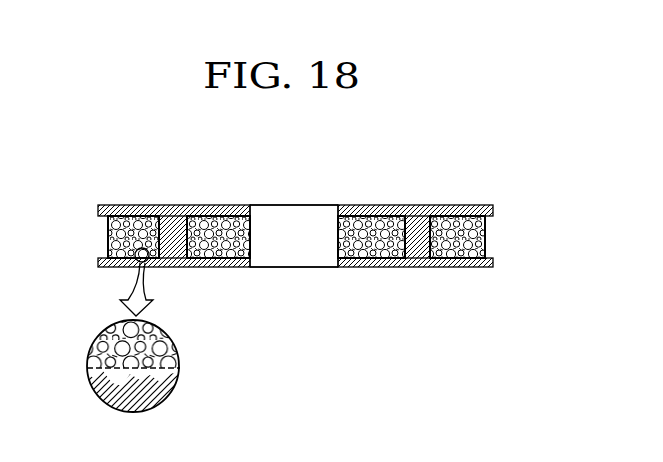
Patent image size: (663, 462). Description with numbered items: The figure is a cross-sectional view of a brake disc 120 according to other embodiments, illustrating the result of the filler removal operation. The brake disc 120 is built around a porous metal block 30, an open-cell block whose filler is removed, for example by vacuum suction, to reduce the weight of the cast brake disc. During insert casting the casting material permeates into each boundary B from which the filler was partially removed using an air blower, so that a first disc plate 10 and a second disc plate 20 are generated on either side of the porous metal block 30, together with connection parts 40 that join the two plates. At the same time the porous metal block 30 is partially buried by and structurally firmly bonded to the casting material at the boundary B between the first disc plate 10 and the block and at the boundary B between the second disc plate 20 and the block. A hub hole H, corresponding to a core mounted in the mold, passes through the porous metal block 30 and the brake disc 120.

The brake disc 120 is at (108, 169).
The first disc plate 10 is at (447, 205).
The second disc plate 20 is at (470, 263).
The porous metal block 30 is at (376, 252).
The connection part 40 is at (420, 250).
The hub hole H is at (336, 236).
The boundary B is at (180, 373).